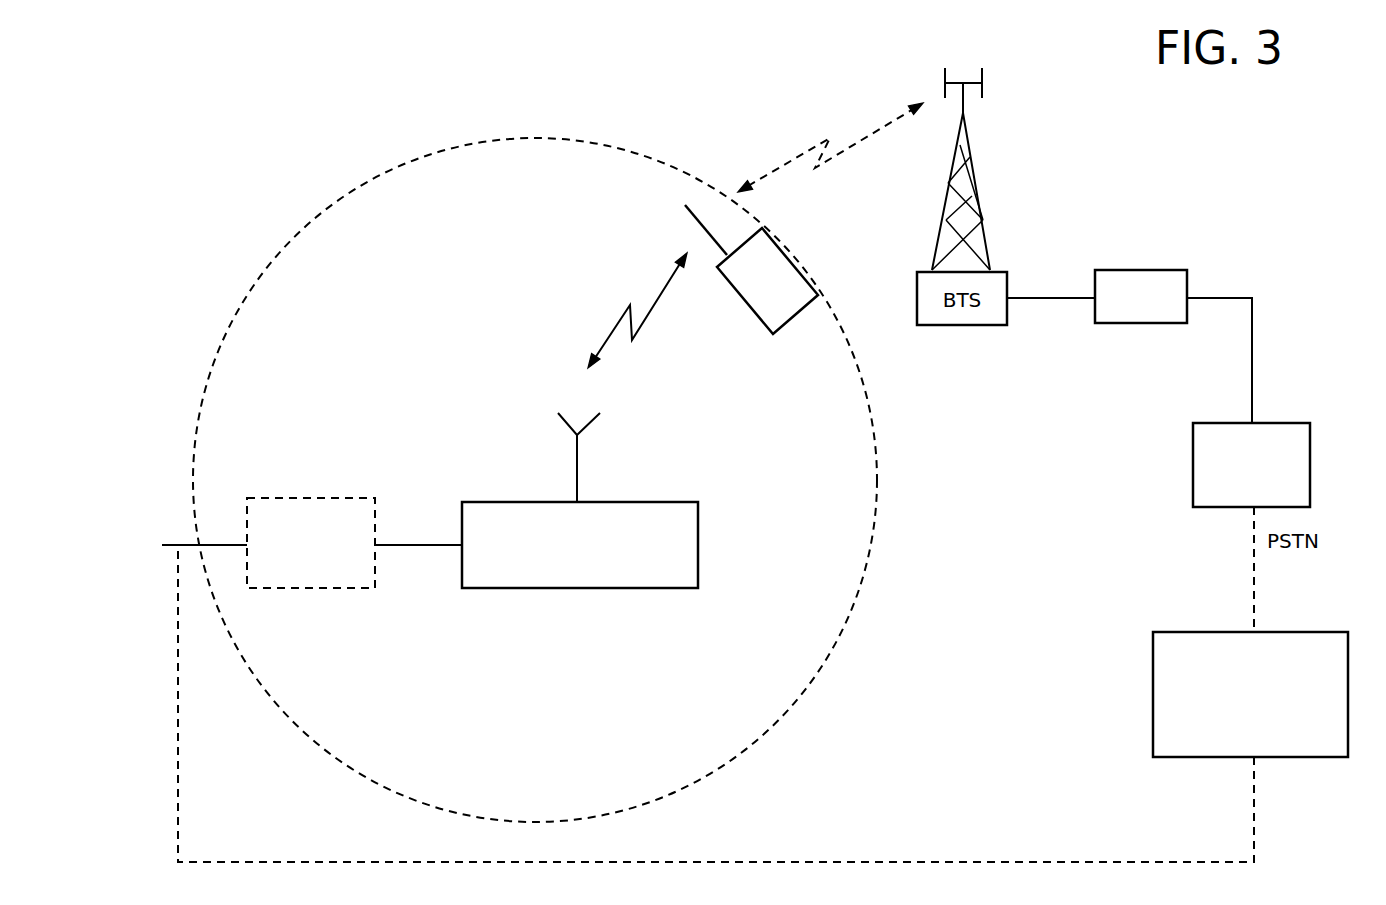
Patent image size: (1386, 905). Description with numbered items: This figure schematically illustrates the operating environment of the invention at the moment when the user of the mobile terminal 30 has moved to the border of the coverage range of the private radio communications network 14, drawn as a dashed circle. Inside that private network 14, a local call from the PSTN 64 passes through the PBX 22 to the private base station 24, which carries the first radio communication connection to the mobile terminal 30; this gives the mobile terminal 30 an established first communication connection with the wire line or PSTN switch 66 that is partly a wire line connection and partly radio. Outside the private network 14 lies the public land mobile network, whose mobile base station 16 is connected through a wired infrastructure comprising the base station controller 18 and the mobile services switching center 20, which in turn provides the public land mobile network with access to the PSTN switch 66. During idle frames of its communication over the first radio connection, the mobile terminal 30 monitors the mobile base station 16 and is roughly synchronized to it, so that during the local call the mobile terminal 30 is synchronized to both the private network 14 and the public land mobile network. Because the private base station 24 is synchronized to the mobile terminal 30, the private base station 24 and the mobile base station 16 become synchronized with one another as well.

The private radio communications network 14 is at (340, 190).
The mobile base station 16 is at (975, 175).
The base station controller 18 is at (1172, 268).
The mobile services switching center 20 is at (1270, 422).
The PBX 22 is at (347, 498).
The private base station 24 is at (660, 588).
The mobile terminal 30 is at (728, 187).
The PSTN 64 is at (142, 558).
The PSTN switch 66 is at (1323, 628).